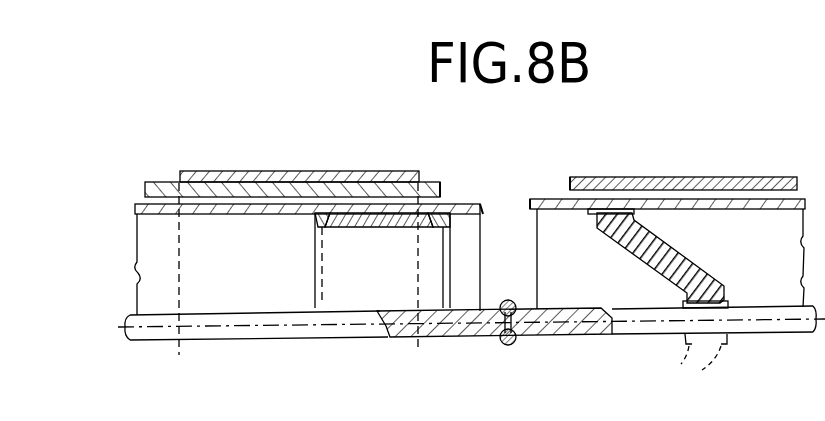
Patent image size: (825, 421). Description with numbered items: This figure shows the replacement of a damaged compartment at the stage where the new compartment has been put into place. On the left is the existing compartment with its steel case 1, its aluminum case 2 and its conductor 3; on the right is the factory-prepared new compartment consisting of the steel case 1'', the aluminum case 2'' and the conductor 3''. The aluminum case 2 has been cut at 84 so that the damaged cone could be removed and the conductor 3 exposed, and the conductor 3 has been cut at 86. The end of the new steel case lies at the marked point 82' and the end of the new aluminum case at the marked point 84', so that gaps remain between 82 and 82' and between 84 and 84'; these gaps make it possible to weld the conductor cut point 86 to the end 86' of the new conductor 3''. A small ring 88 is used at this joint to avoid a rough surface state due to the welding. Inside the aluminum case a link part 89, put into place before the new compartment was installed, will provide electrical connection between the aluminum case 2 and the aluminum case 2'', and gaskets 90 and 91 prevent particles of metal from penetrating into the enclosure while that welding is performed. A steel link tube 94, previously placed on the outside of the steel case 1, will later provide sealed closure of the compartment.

The steel case 1 is at (292, 158).
The steel link tube 94 is at (297, 173).
The cut point of steel case 82 is at (457, 157).
The cut point of aluminum case 84 is at (486, 184).
The aluminum case 2 is at (307, 235).
The link part 89 is at (385, 228).
The gasket 90 is at (337, 228).
The gasket 91 is at (433, 228).
The conductor 3 is at (256, 348).
The conductor cut point 86 is at (494, 295).
The small ring 88 is at (505, 301).
The end of new conductor 86' is at (478, 357).
The conductor of new compartment 3'' is at (714, 345).
The steel case of new compartment 1'' is at (683, 151).
The end of new steel case 82' is at (550, 153).
The aluminum case of new compartment 2'' is at (667, 229).
The end of new aluminum case 84' is at (532, 180).